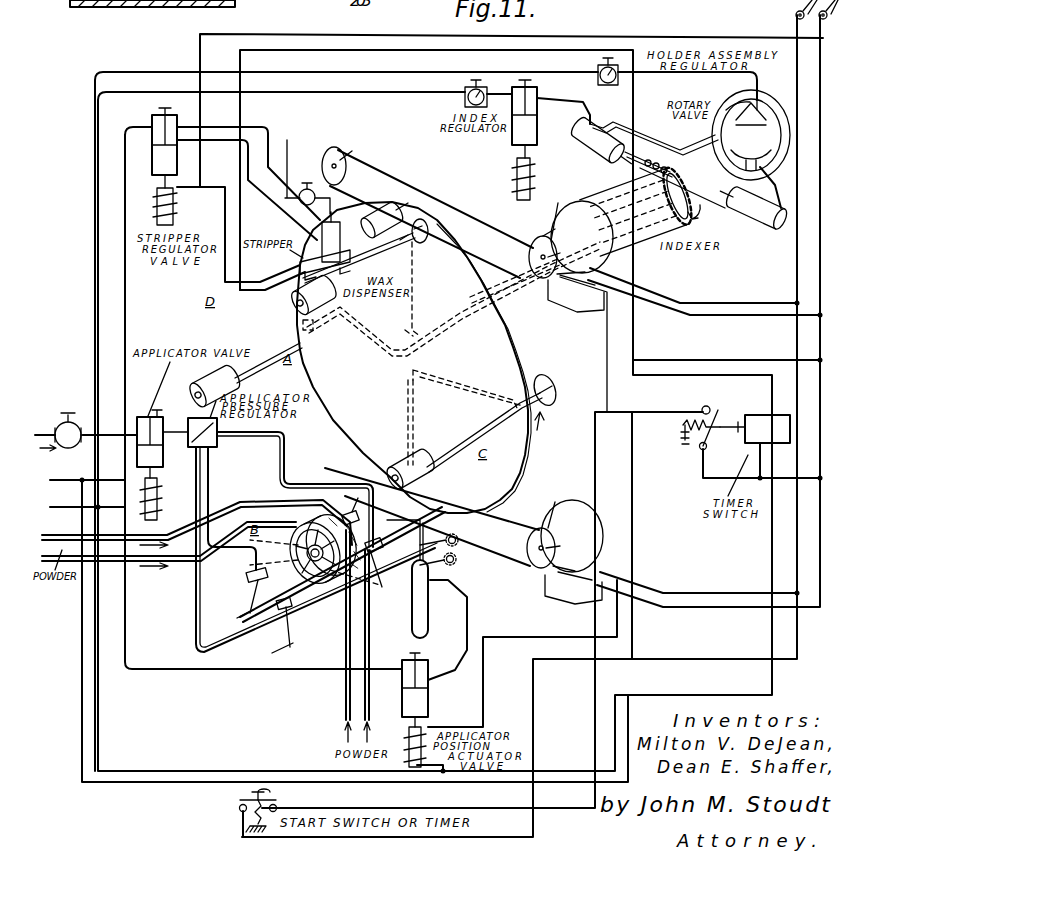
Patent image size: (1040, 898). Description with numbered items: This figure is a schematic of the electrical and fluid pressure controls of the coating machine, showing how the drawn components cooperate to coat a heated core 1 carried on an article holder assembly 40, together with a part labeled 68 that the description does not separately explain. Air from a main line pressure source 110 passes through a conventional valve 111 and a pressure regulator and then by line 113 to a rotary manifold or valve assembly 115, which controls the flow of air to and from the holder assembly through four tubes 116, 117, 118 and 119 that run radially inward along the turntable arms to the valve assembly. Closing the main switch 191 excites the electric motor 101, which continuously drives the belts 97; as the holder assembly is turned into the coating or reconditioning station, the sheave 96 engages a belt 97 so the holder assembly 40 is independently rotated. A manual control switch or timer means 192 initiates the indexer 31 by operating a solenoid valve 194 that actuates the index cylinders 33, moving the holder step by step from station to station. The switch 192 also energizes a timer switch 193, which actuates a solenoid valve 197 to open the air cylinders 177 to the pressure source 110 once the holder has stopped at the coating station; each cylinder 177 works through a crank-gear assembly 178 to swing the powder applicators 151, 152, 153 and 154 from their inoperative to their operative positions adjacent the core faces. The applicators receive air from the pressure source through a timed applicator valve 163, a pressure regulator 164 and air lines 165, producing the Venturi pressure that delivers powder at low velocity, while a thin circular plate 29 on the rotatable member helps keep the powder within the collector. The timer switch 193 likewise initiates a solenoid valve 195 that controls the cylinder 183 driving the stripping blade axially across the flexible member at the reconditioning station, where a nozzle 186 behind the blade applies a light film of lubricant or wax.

The core 1 is at (310, 526).
The thin circular plate 29 is at (521, 352).
The indexer unit 31 is at (645, 170).
The air actuated cylinders 33 is at (596, 140).
The article holder assembly 40 is at (292, 303).
The support bar 68 is at (170, 7).
The sheave 96 is at (553, 390).
The belts 97 is at (446, 200).
The electric motor 101 is at (565, 222).
The main line pressure source 110 is at (45, 430).
The valve 111 is at (73, 445).
The line 113 is at (597, 71).
The rotary manifold or valve assembly 115 is at (752, 117).
The tube 116 is at (360, 335).
The tube 117 is at (414, 417).
The tube 118 is at (482, 387).
The tube 119 is at (440, 310).
The powder applicator 151 is at (250, 575).
The powder applicator 152 is at (354, 510).
The powder applicator 153 is at (279, 609).
The powder applicator 154 is at (368, 553).
The timed applicator valve 163 is at (162, 452).
The pressure regulator 164 is at (195, 418).
The air lines 165 is at (243, 448).
The air cylinder 177 is at (412, 612).
The crank-gear assembly 178 is at (410, 535).
The cylinder 183 is at (392, 212).
The nozzle 186 is at (340, 266).
The main switch 191 is at (796, 4).
The manual control switch or timer means 192 is at (240, 806).
The timer switch 193 is at (762, 415).
The solenoid valve 194 is at (535, 128).
The solenoid valve 195 is at (152, 160).
The solenoid valve 197 is at (428, 706).